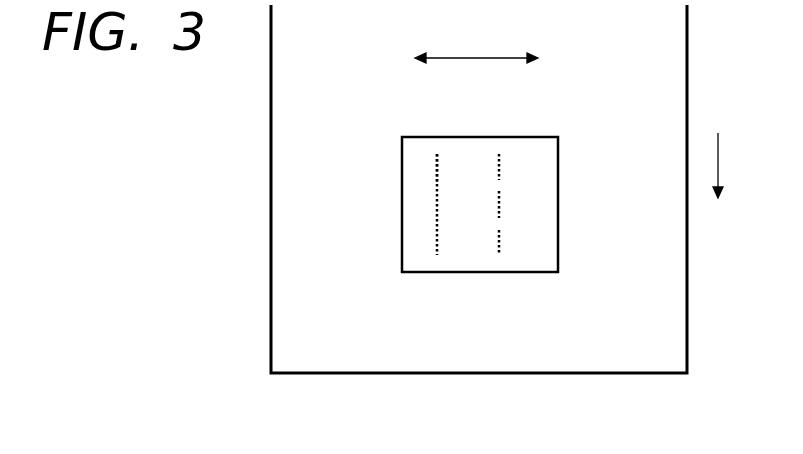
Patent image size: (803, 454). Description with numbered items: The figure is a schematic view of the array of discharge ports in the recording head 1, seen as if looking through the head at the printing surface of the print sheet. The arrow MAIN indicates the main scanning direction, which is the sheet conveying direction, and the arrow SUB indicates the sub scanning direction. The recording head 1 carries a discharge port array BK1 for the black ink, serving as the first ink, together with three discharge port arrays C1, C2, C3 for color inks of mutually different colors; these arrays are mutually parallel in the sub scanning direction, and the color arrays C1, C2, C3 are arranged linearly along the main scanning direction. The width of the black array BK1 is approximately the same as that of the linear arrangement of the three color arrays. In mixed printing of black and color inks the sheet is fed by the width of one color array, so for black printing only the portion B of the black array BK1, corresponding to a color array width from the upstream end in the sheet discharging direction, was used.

The recording head 1 is at (481, 272).
The discharge port array for black ink BK1 is at (437, 199).
The portion of black discharge port array B is at (443, 154).
The discharge port array for color ink C1 is at (499, 166).
The discharge port array for color ink C2 is at (499, 199).
The discharge port array for color ink C3 is at (499, 236).
The sub scanning direction SUB is at (476, 46).
The main scanning direction MAIN is at (749, 165).